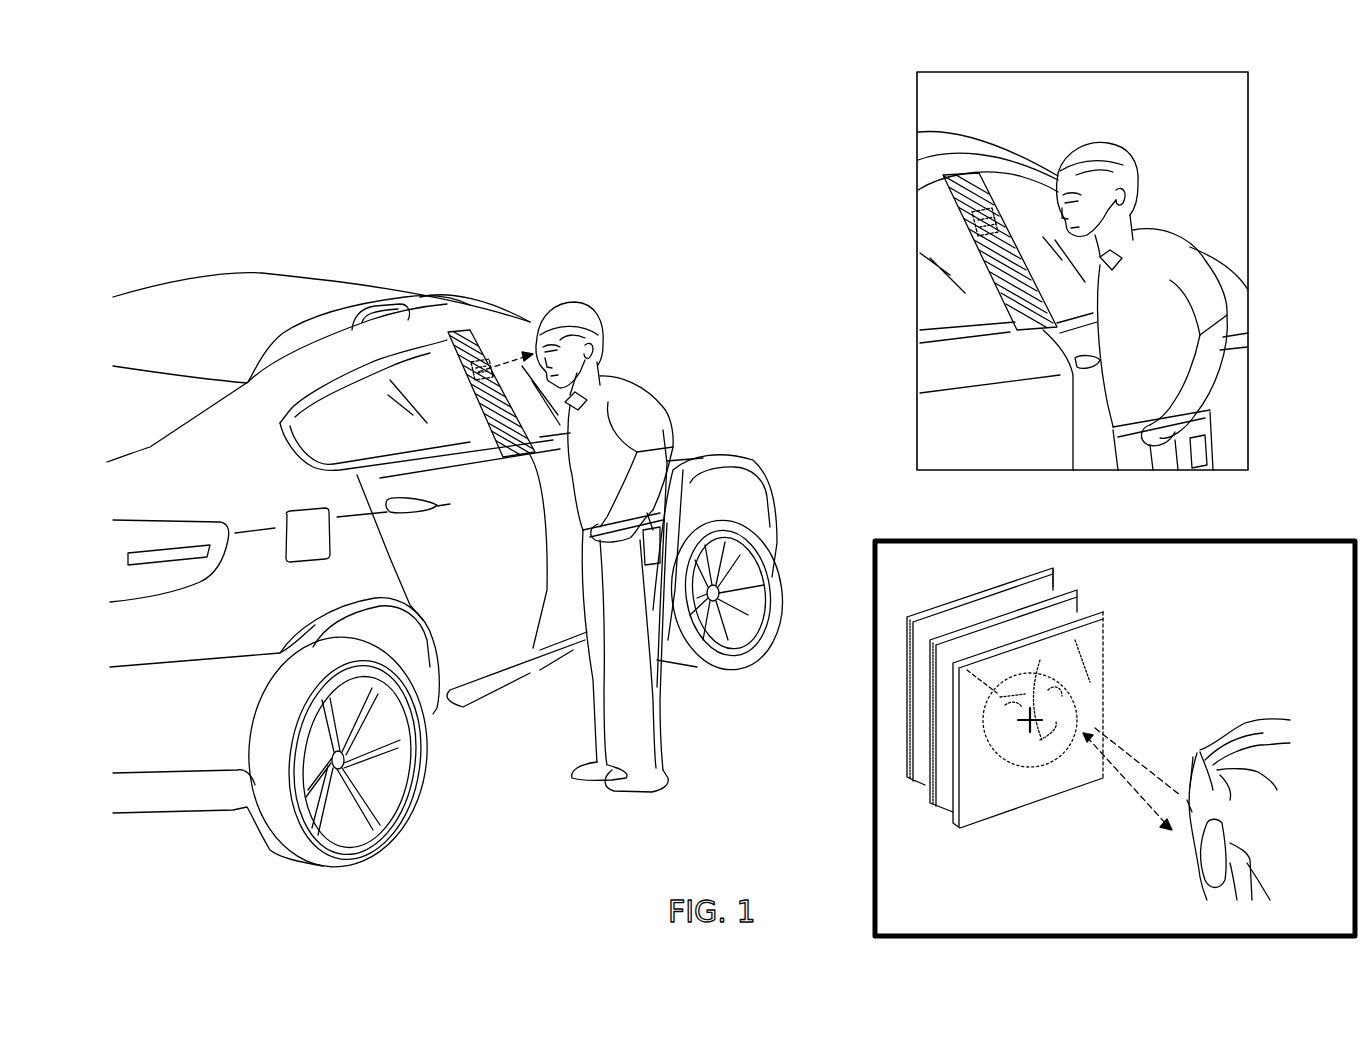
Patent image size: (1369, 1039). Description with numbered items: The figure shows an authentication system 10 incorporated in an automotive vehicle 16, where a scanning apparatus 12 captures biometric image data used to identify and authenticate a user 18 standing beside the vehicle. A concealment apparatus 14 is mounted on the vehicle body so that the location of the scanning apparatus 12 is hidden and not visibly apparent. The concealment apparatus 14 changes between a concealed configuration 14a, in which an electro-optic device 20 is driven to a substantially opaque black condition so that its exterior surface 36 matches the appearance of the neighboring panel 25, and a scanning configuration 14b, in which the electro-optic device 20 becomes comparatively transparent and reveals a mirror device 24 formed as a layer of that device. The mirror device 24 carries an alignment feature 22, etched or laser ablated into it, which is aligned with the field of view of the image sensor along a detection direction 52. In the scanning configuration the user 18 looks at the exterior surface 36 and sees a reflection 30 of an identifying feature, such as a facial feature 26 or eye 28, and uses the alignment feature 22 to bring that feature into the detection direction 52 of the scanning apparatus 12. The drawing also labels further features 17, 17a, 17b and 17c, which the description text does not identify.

The authentication system 10 is at (492, 238).
The scanning apparatus 12 is at (735, 269).
The concealment apparatus 14 is at (789, 509).
The concealed configuration 14a is at (1003, 509).
The scanning configuration 14b is at (465, 312).
The automotive vehicle 16 is at (157, 310).
The pillar trim panel assembly 17 is at (972, 223).
The outer panel layer 17a is at (980, 587).
The intermediate panel layer 17b is at (1077, 604).
The inner panel layer 17c is at (1104, 614).
The user 18 is at (623, 385).
The electro-optic device 20 is at (735, 269).
The alignment feature 22 is at (1050, 676).
The mirror device 24 is at (463, 372).
The panel 25 is at (500, 402).
The facial feature 26 is at (913, 508).
The eye 28 is at (560, 328).
The reflection 30 is at (467, 385).
The exterior surface 36 is at (1090, 678).
The detection direction 52 is at (512, 357).